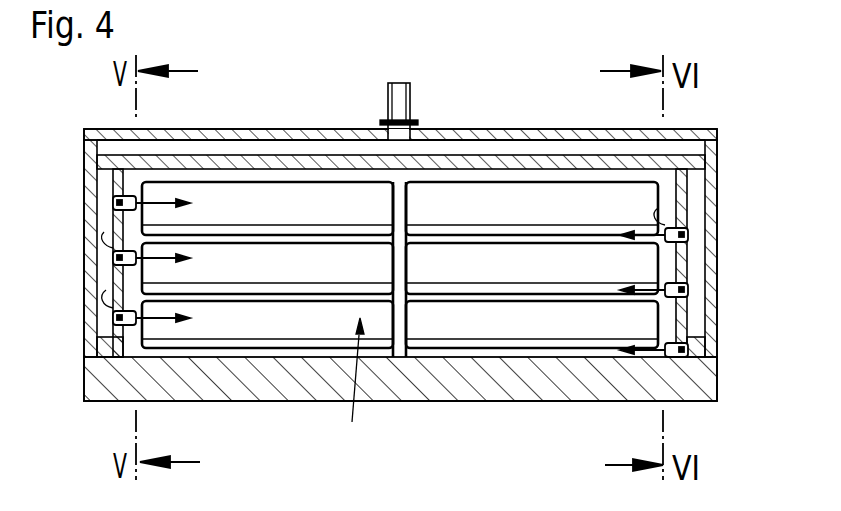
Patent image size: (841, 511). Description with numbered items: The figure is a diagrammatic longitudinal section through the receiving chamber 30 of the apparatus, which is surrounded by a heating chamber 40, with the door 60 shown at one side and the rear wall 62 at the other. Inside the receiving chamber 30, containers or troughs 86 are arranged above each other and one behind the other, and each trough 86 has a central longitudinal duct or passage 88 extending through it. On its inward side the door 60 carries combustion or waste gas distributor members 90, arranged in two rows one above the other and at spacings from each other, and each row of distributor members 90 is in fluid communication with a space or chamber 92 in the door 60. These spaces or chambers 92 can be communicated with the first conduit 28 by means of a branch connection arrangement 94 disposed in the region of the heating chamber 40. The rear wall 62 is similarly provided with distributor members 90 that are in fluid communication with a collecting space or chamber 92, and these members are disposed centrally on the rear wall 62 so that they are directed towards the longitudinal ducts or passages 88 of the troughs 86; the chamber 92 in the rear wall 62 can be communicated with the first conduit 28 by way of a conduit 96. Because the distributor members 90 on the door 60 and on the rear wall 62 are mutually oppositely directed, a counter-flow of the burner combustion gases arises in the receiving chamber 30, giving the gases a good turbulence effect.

The first conduit 28 is at (409, 112).
The receiving chamber 30 is at (350, 384).
The heating chamber 40 is at (393, 387).
The door 60 is at (116, 334).
The rear wall 62 is at (713, 207).
The troughs 86 is at (292, 222).
The central longitudinal duct 88 is at (231, 232).
The gas distributor members 90 is at (113, 203).
The space or chamber 92 is at (103, 227).
The branch connection arrangement 94 is at (95, 165).
The conduit 96 is at (694, 162).